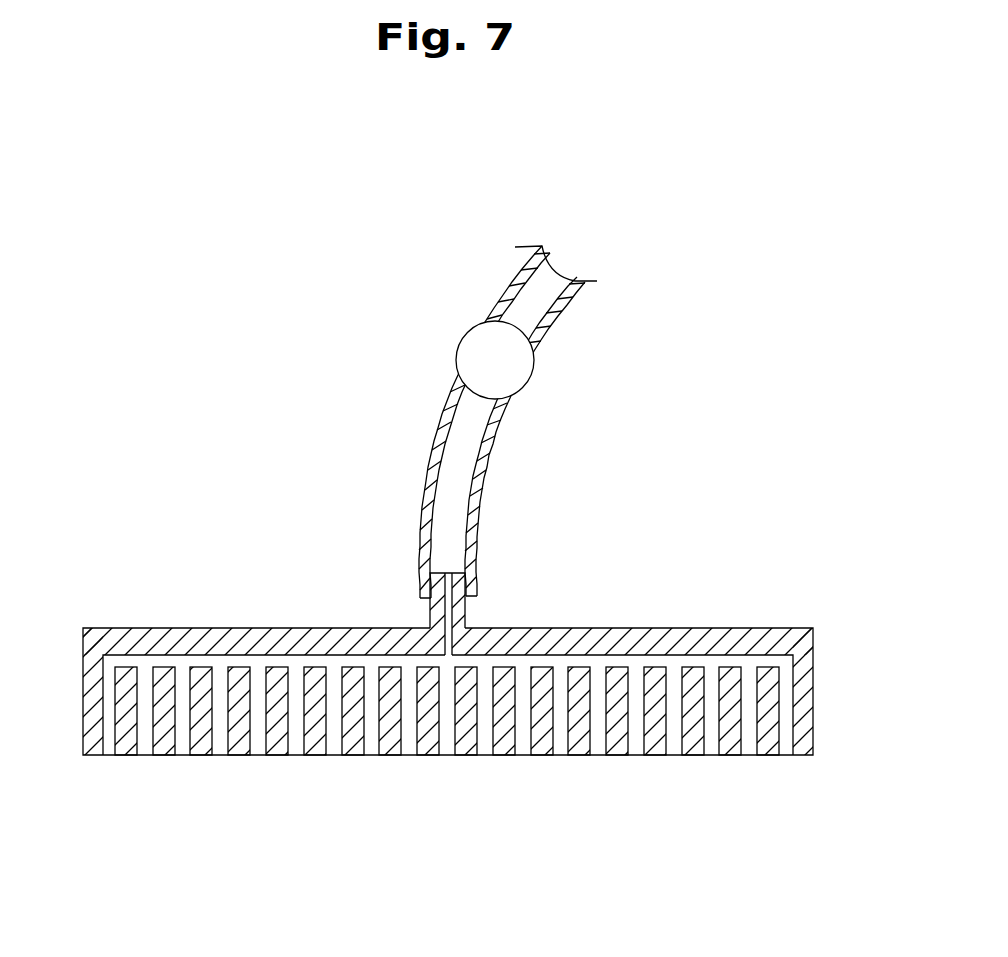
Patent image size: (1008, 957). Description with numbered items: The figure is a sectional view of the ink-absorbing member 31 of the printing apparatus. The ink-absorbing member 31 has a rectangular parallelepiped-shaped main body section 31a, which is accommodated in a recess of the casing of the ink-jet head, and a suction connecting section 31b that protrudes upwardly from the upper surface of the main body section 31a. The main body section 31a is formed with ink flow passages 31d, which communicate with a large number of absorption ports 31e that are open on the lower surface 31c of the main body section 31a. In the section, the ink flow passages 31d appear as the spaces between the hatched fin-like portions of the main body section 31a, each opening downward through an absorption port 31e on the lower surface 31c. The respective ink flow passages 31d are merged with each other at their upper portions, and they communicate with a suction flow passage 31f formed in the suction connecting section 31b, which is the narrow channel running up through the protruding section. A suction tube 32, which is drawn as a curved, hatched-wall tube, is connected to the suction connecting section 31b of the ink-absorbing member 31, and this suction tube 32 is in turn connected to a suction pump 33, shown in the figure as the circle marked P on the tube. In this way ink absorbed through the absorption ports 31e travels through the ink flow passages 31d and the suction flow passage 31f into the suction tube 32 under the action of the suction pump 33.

The ink-absorbing member 31 is at (808, 633).
The main body section 31a is at (83, 628).
The suction connecting section 31b is at (463, 622).
The lower surface 31c is at (128, 755).
The ink flow passages 31d is at (748, 723).
The absorption ports 31e is at (707, 757).
The suction flow passage 31f is at (445, 615).
The suction tube 32 is at (440, 435).
The suction pump 33 is at (527, 385).